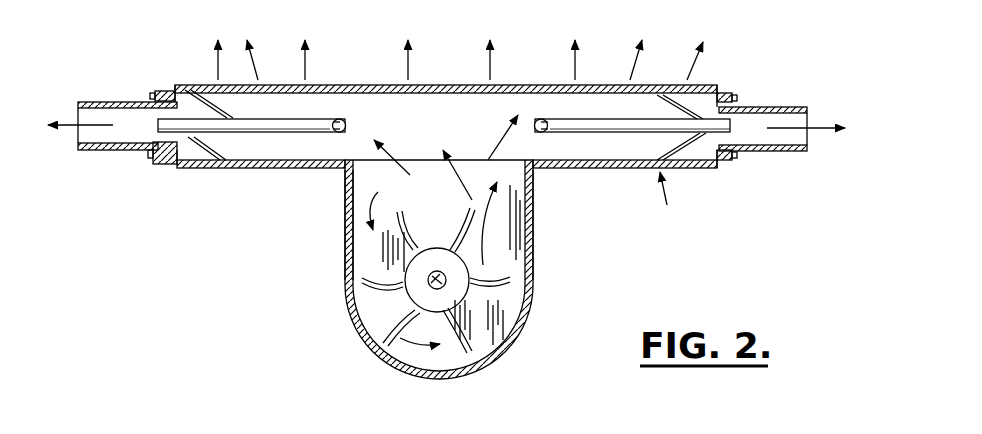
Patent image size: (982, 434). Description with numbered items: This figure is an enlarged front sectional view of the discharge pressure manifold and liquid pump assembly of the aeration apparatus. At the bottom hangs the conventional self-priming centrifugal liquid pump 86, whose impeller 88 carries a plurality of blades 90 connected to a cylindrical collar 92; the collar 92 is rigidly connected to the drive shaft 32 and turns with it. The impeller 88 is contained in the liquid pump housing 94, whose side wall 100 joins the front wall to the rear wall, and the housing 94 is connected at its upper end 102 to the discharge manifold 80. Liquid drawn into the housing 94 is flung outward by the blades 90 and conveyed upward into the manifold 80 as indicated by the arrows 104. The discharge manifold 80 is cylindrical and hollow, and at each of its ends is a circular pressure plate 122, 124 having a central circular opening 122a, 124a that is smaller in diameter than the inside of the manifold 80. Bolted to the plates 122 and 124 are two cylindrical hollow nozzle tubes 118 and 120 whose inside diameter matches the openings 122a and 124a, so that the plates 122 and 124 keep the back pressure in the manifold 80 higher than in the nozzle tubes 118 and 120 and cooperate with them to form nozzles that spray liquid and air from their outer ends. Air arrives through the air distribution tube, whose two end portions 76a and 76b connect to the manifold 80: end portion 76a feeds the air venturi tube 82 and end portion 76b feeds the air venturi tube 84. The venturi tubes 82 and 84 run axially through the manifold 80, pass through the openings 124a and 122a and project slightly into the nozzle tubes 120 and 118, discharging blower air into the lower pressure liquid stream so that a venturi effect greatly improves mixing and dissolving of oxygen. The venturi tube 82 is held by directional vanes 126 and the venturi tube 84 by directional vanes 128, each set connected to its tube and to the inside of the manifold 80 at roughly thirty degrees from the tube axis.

The drive shaft 32 is at (434, 283).
The end portion of air distribution tube 76a is at (545, 119).
The end portion of air distribution tube 76b is at (340, 118).
The discharge manifold 80 is at (673, 201).
The air venturi tube 82 is at (604, 134).
The air venturi tube 84 is at (262, 118).
The centrifugal liquid pump 86 is at (547, 288).
The impeller 88 is at (381, 198).
The blades 90 is at (452, 236).
The cylindrical collar 92 is at (513, 338).
The liquid pump housing 94 is at (536, 257).
The side wall 100 is at (347, 251).
The upper end of liquid pump housing 102 is at (340, 180).
The arrows 104 is at (497, 128).
The hollow nozzle tube 118 is at (100, 102).
The hollow nozzle tube 120 is at (752, 107).
The circular pressure plate 122 is at (190, 167).
The circular opening 122a is at (153, 157).
The circular pressure plate 124 is at (700, 170).
The circular opening 124a is at (760, 150).
The directional vanes 126 is at (680, 83).
The directional vanes 128 is at (200, 113).